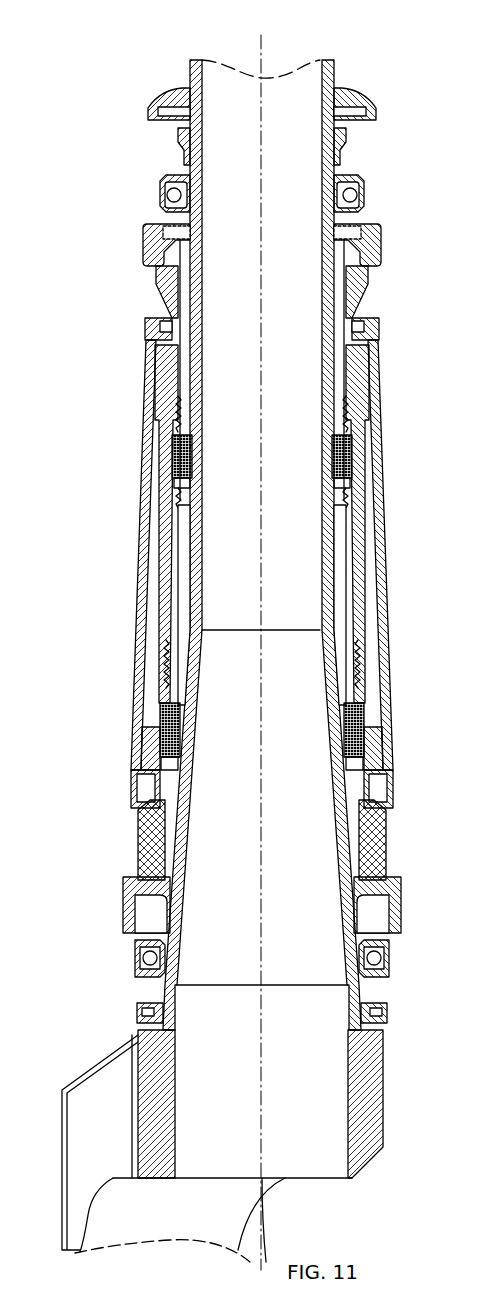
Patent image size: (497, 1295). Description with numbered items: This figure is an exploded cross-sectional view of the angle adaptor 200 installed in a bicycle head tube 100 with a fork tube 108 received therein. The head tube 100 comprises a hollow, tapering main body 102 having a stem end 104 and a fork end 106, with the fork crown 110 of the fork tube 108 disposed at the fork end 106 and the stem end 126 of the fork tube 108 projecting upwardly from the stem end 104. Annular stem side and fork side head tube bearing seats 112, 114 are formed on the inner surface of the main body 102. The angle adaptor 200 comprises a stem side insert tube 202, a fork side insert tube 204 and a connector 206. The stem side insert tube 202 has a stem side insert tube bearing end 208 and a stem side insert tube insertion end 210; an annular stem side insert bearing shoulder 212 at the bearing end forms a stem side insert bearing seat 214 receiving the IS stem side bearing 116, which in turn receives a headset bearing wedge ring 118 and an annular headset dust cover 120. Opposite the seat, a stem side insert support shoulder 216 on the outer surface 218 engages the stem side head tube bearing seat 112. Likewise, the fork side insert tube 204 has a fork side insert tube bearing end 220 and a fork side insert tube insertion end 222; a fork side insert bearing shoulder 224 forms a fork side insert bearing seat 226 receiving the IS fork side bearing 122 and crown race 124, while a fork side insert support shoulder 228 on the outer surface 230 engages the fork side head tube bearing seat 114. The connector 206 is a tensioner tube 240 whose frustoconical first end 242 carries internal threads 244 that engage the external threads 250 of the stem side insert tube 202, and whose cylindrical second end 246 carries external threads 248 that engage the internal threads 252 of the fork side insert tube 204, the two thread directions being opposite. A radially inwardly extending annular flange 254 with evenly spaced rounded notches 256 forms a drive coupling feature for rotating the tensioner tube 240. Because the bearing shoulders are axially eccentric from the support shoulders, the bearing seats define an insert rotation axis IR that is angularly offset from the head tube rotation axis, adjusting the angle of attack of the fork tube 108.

The head tube 100 is at (108, 487).
The main body 102 is at (101, 591).
The stem end 104 is at (145, 318).
The fork end 106 is at (127, 812).
The fork tube 108 is at (188, 60).
The fork crown 110 is at (88, 1062).
The stem side head tube bearing seat 112 is at (356, 318).
The fork side head tube bearing seat 114 is at (385, 785).
The IS stem side bearing 116 is at (365, 186).
The headset bearing wedge ring 118 is at (340, 148).
The headset dust cover 120 is at (372, 102).
The IS fork side bearing 122 is at (390, 962).
The crown race 124 is at (385, 1010).
The stem end 126 is at (332, 62).
The angle adaptor 200 is at (115, 108).
The stem side insert tube 202 is at (121, 199).
The fork side insert tube 204 is at (120, 900).
The connector 206 is at (158, 585).
The stem side insert tube bearing end 208 is at (152, 220).
The stem side insert tube insertion end 210 is at (168, 420).
The stem side insert bearing shoulder 212 is at (350, 240).
The stem side insert bearing seat 214 is at (174, 232).
The stem side insert support shoulder 216 is at (355, 290).
The outer surface 218 is at (170, 305).
The fork side insert tube bearing end 220 is at (156, 908).
The fork side insert tube insertion end 222 is at (158, 700).
The fork side insert bearing shoulder 224 is at (372, 920).
The fork side insert bearing seat 226 is at (137, 1012).
The fork side insert support shoulder 228 is at (376, 835).
The outer surface 230 is at (138, 860).
The tensioner tube 240 is at (163, 560).
The first end 242 is at (345, 432).
The threads 244 is at (340, 455).
The second end 246 is at (370, 690).
The threads 248 is at (364, 695).
The threads 250 is at (355, 398).
The threads 252 is at (350, 728).
The annular flange 254 is at (410, 592).
The rounded notches 256 is at (182, 490).
The insert rotation axis IR is at (265, 52).